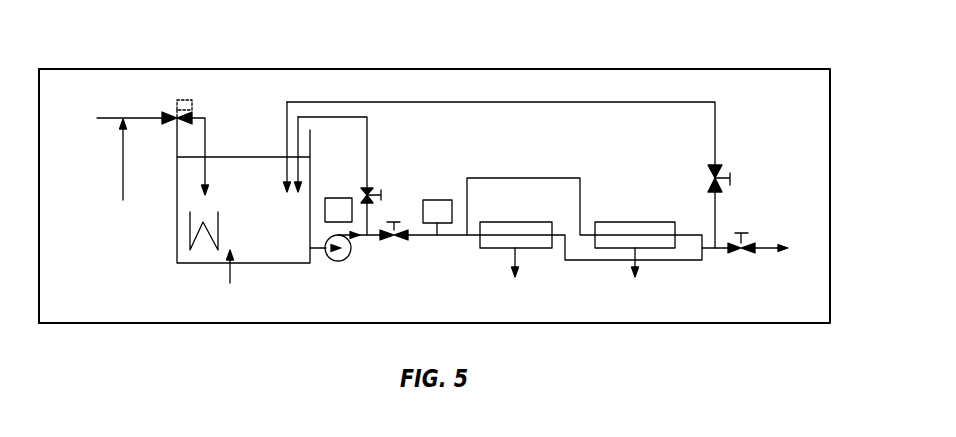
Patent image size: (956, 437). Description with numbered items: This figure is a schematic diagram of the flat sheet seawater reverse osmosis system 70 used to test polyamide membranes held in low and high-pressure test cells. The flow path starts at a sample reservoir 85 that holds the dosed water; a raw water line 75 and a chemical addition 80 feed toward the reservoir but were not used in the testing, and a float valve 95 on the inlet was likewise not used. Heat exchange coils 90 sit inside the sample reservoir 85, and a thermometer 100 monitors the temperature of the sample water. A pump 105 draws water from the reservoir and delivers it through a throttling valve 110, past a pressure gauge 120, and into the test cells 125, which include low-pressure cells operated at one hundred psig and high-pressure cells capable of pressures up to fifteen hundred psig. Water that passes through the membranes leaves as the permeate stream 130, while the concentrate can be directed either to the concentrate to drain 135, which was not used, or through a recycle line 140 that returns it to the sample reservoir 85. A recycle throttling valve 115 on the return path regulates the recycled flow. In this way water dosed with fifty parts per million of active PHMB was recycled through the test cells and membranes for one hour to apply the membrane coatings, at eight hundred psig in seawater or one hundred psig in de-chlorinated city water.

The flat sheet seawater reverse osmosis system 70 is at (152, 50).
The raw water line 75 is at (108, 116).
The chemical addition 80 is at (122, 190).
The sample reservoir 85 is at (230, 275).
The heat exchange coils 90 is at (258, 230).
The float valve 95 is at (180, 98).
The thermometer 100 is at (332, 198).
The pump 105 is at (338, 262).
The throttling valve 110 is at (405, 240).
The recycle throttling valve 115 is at (373, 187).
The pressure gauge 120 is at (443, 198).
The test cells 125 is at (515, 220).
The permeate stream 130 is at (517, 255).
The concentrate to drain 135 is at (762, 243).
The recycle line 140 is at (715, 138).